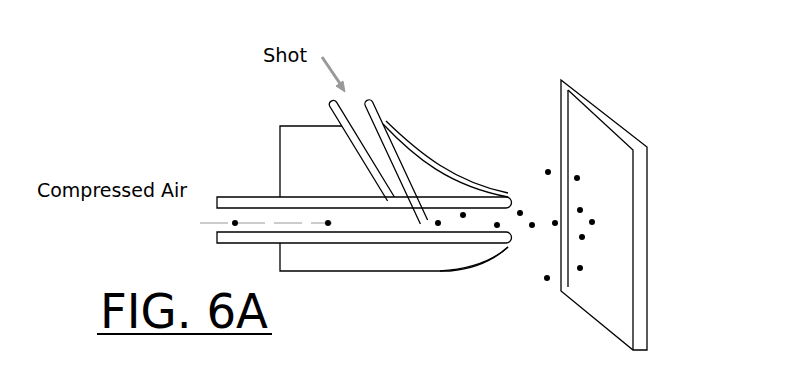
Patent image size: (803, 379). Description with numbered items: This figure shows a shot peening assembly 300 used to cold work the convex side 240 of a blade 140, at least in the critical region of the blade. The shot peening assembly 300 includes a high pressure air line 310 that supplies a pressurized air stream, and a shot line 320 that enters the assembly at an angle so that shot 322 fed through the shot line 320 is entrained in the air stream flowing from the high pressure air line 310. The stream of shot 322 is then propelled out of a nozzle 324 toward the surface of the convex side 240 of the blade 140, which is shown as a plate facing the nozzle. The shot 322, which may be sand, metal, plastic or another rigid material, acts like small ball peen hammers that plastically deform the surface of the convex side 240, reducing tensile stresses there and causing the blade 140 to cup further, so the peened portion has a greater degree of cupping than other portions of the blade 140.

The blade 140 is at (612, 89).
The convex side 240 is at (573, 147).
The shot peening assembly 300 is at (239, 152).
The high pressure air line 310 is at (263, 230).
The shot line 320 is at (359, 147).
The shot 322 is at (390, 183).
The nozzle 324 is at (495, 252).